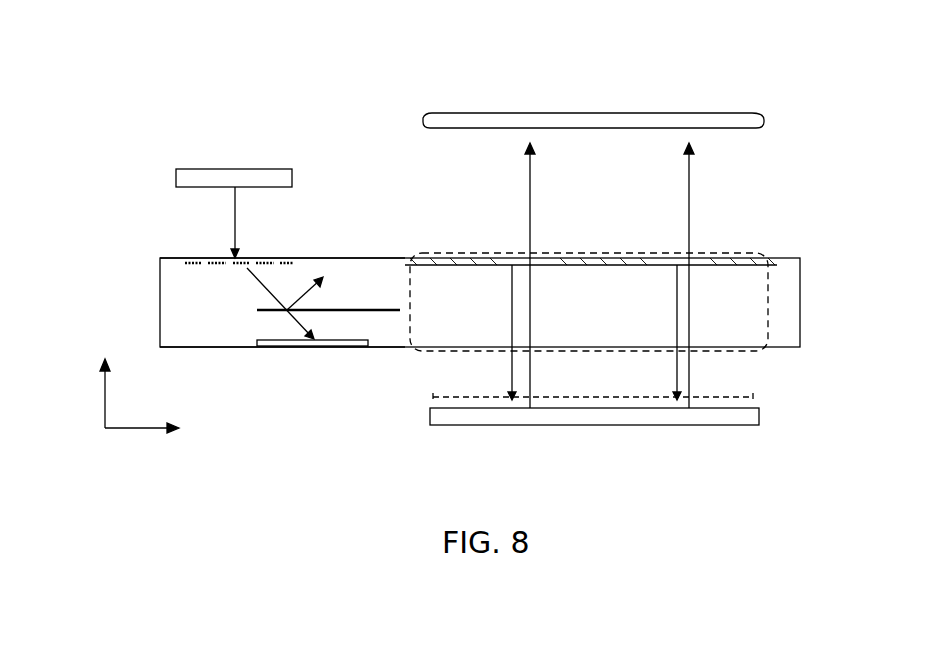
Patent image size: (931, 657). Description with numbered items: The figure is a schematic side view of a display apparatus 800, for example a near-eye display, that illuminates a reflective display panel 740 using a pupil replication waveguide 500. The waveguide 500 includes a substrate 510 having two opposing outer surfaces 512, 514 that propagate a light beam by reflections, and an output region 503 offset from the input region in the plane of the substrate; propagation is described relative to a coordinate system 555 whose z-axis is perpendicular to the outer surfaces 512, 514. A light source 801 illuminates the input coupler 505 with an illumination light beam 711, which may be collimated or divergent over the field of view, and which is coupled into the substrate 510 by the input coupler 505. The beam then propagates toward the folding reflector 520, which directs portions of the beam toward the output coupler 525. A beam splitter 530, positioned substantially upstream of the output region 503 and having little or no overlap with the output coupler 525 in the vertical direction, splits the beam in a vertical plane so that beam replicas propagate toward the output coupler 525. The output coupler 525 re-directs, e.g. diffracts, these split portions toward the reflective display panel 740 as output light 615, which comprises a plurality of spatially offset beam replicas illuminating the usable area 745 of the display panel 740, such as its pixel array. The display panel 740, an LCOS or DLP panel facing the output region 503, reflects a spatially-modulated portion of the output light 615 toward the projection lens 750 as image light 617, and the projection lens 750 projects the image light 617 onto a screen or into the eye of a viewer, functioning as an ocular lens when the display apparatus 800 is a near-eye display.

The display apparatus 800 is at (656, 51).
The projection lens 750 is at (478, 113).
The light source 801 is at (202, 168).
The pupil replication waveguide 500 is at (388, 168).
The substrate 510 is at (219, 329).
The input coupler 505 is at (218, 257).
The outer surface 512 is at (316, 252).
The outer surface 514 is at (234, 353).
The illumination light beam 711 is at (236, 230).
The beam splitter 530 is at (332, 308).
The folding reflector 520 is at (313, 345).
The output region 503 is at (585, 252).
The output coupler 525 is at (712, 256).
The image light 617 is at (532, 237).
The output light 615 is at (509, 385).
The usable area of the display panel 745 is at (462, 400).
The reflective display panel 740 is at (638, 426).
The coordinate system 555 is at (98, 446).